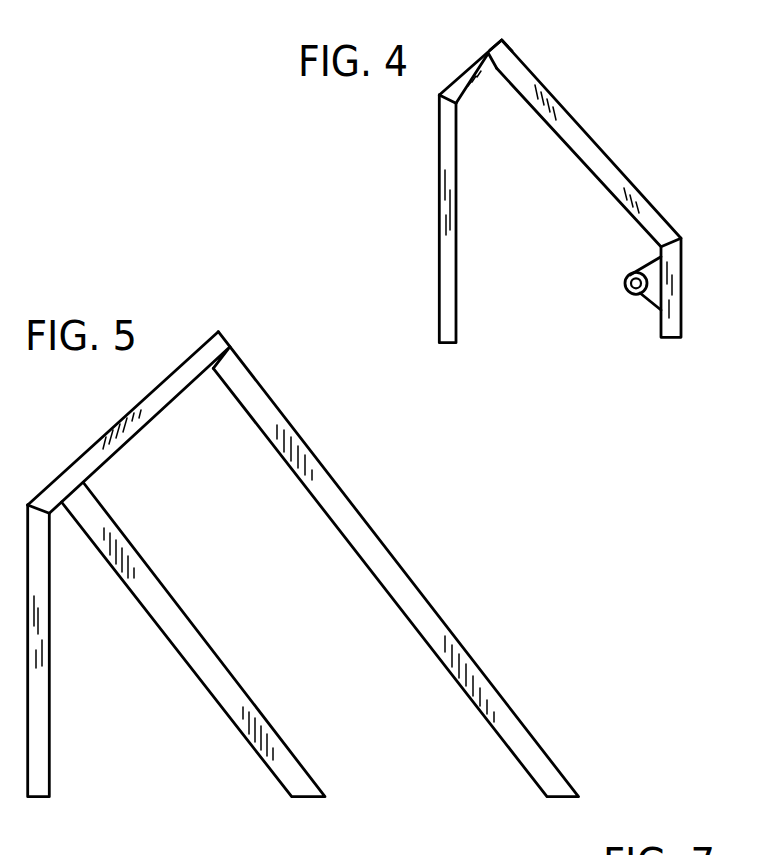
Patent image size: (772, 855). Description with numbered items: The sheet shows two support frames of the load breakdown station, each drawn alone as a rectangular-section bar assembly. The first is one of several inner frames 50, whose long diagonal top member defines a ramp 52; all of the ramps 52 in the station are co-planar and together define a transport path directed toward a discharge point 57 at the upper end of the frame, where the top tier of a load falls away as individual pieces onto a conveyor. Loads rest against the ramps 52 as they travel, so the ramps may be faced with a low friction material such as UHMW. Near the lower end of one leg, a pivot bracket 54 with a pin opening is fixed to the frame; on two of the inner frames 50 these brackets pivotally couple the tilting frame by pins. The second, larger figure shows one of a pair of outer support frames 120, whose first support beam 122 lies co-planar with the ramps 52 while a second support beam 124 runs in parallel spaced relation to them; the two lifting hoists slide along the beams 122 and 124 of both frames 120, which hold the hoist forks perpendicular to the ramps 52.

In FIG. 4, the inner frame 50 is at (584, 130).
In FIG. 4, the ramp 52 is at (637, 187).
In FIG. 4, the pivot bracket 54 is at (652, 298).
In FIG. 4, the discharge point 57 is at (500, 38).
In FIG. 5, the outer support frame 120 is at (78, 460).
In FIG. 5, the first support beam 122 is at (260, 716).
In FIG. 5, the second support beam 124 is at (438, 612).